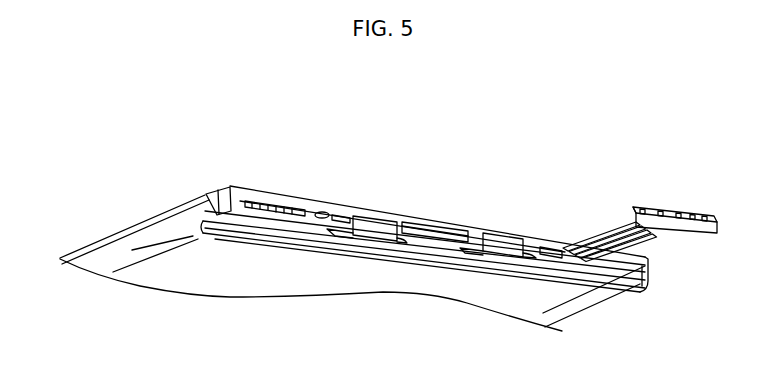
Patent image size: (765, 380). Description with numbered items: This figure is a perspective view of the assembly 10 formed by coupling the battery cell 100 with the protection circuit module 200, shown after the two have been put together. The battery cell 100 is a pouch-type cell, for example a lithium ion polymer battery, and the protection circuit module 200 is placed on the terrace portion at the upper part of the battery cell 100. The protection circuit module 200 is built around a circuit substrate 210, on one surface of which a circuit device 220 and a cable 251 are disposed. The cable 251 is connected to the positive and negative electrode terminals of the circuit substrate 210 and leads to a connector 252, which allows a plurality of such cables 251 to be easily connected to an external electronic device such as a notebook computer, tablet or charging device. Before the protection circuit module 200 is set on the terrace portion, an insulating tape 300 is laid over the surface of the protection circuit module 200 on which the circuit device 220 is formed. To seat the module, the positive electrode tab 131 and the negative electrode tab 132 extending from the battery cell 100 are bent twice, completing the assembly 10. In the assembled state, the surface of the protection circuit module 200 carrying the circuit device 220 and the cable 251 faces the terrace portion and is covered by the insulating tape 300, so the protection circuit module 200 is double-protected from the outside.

The assembly 10 is at (270, 116).
The battery cell 100 is at (172, 217).
The insulating tape 300 is at (221, 197).
The protection circuit module 200 is at (262, 191).
The circuit substrate 210 is at (311, 204).
The negative electrode tab 132 is at (373, 224).
The circuit device 220 is at (433, 230).
The positive electrode tab 131 is at (504, 243).
The cable 251 is at (607, 235).
The connector 252 is at (682, 216).